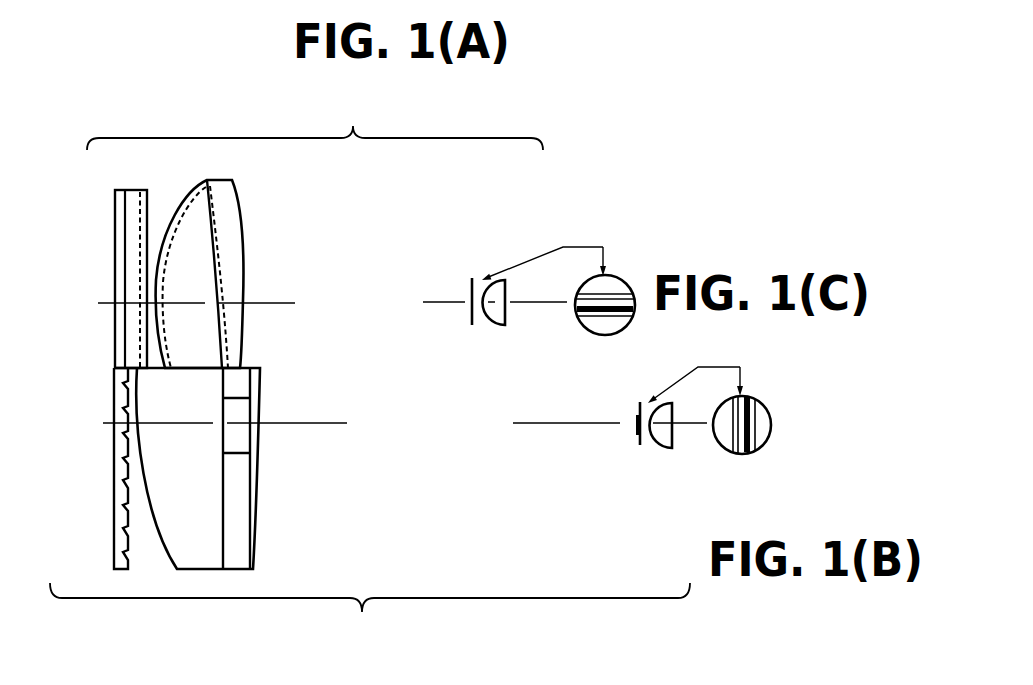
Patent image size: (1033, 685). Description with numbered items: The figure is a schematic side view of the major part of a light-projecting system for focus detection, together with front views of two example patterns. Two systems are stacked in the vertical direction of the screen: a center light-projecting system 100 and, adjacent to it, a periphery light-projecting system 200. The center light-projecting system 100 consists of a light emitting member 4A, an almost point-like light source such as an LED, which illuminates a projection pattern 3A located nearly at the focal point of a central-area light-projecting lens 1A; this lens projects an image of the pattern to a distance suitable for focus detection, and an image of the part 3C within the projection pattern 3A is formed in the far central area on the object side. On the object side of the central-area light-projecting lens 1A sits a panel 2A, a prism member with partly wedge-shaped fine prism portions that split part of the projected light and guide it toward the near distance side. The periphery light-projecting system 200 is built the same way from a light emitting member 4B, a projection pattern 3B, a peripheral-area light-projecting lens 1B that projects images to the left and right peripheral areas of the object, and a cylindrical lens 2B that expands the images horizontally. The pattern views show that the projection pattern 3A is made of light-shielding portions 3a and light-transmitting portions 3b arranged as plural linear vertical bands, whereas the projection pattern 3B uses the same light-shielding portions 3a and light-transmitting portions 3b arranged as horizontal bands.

In FIG. 1A, the periphery light-projecting system 200 is at (315, 120).
In FIG. 1A, the center light-projecting system 100 is at (370, 613).
In FIG. 1A, the central-area light-projecting lens 1A is at (260, 517).
In FIG. 1A, the peripheral-area light-projecting lens 1B is at (243, 257).
In FIG. 1A, the panel 2A is at (114, 508).
In FIG. 1A, the cylindrical lens 2B is at (114, 252).
In FIG. 1B, the projection pattern 3A is at (640, 445).
In FIG. 1C, the projection pattern 3B is at (472, 280).
In FIG. 1B, the part within the projection pattern 3C is at (637, 418).
In FIG. 1B, the light emitting member 4A is at (667, 450).
In FIG. 1C, the light emitting member 4B is at (507, 283).
In FIG. 1B, the light-shielding portions 3a is at (766, 400).
In FIG. 1B, the light-transmitting portions 3b is at (757, 453).